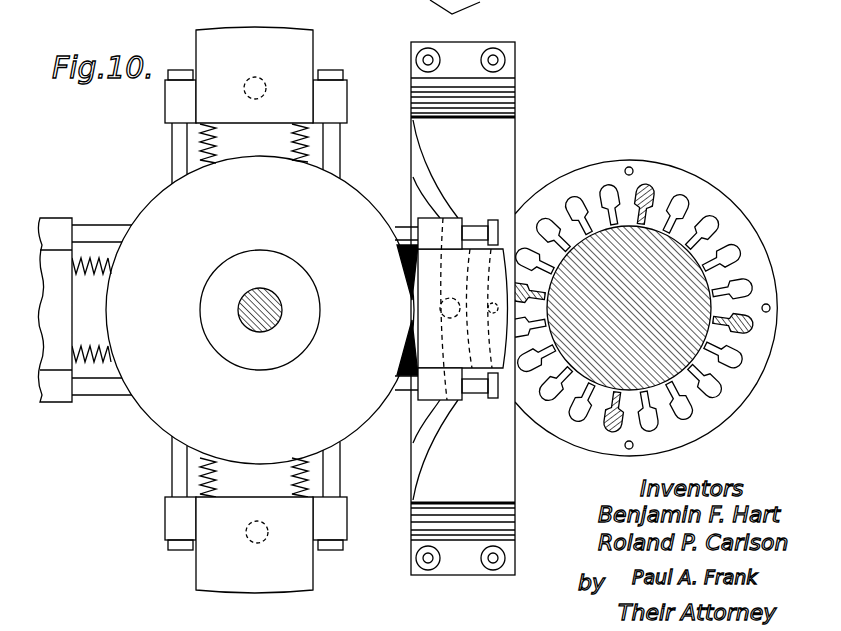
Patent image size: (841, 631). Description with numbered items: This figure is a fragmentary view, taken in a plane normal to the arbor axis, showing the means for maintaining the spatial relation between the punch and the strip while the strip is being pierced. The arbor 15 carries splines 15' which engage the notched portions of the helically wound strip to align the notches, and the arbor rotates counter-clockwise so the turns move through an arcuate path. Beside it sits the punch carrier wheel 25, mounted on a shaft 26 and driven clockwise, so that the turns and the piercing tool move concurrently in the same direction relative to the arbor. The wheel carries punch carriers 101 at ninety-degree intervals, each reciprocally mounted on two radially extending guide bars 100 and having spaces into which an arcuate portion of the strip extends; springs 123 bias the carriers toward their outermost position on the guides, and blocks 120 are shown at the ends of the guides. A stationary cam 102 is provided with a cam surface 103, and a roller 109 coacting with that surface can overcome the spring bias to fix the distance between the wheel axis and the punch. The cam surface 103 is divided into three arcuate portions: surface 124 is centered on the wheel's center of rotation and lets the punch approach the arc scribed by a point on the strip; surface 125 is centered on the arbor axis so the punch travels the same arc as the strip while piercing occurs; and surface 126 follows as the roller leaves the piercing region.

The arbor 15 is at (640, 308).
The splines 15' is at (629, 288).
The punch carrier wheel 25 is at (153, 398).
The shaft 26 is at (242, 312).
The guide bars 100 is at (180, 145).
The punch carrier 101 is at (240, 38).
The cam 102 is at (516, 137).
The cam surface 103 is at (440, 180).
The roller 109 is at (488, 307).
The bearing block 120 is at (170, 103).
The springs 123 is at (292, 131).
The cam surface portion 124 is at (453, 204).
The cam surface portion 125 is at (440, 290).
The cam surface portion 126 is at (433, 450).